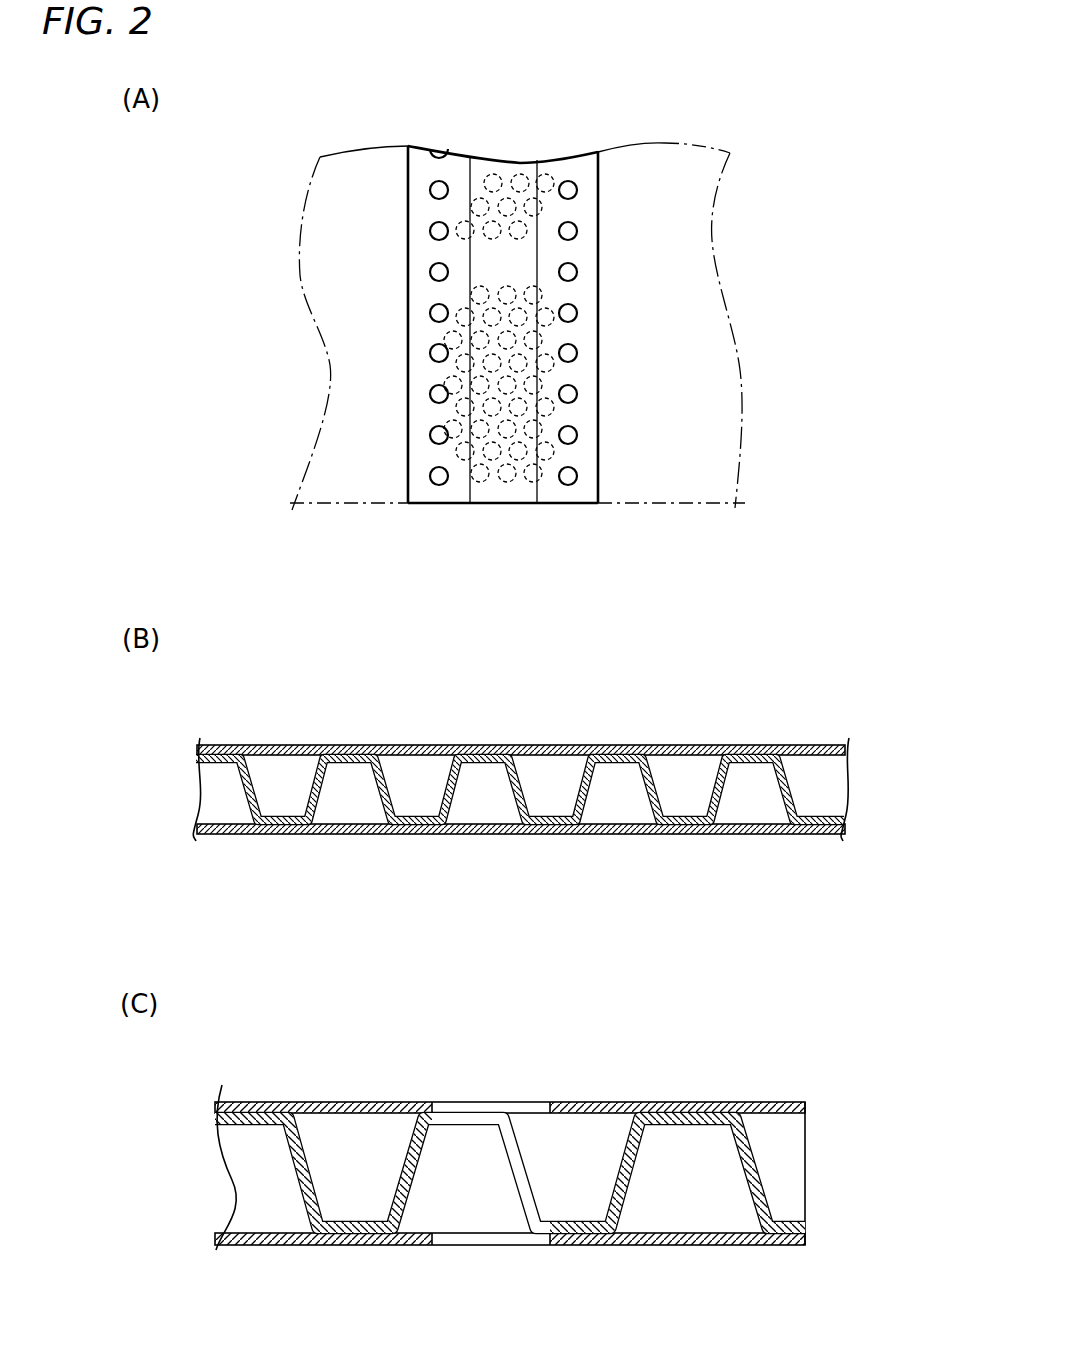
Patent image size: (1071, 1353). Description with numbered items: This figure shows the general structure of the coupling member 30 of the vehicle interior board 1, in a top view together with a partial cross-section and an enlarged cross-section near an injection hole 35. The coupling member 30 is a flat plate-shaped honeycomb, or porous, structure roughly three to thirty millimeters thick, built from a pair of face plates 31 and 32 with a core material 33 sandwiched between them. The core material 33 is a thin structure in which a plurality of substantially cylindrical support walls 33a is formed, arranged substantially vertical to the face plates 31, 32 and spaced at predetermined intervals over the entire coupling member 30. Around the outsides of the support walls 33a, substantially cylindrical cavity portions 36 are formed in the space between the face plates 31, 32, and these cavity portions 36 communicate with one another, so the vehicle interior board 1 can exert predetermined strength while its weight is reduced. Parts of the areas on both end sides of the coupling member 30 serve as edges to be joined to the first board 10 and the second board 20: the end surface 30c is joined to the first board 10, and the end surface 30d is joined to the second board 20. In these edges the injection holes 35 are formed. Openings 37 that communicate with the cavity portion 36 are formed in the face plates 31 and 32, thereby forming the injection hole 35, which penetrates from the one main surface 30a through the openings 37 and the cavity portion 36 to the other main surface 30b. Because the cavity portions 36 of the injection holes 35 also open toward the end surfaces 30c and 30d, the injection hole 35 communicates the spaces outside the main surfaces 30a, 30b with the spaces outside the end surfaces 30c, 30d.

The vehicle interior board 1 is at (822, 150).
The first board 10 is at (760, 266).
The second board 20 is at (262, 198).
The coupling member 30 is at (512, 160).
The one main surface 30a is at (717, 1100).
The other main surface 30b is at (718, 1247).
The end surface 30c is at (599, 437).
The end surface 30d is at (407, 431).
The face plate 31 is at (362, 750).
The face plate 32 is at (355, 835).
The core material 33 is at (242, 795).
The support wall 33a is at (465, 310).
The injection hole 35 is at (578, 352).
The cavity portion 36 is at (548, 780).
The opening 37 is at (528, 1101).